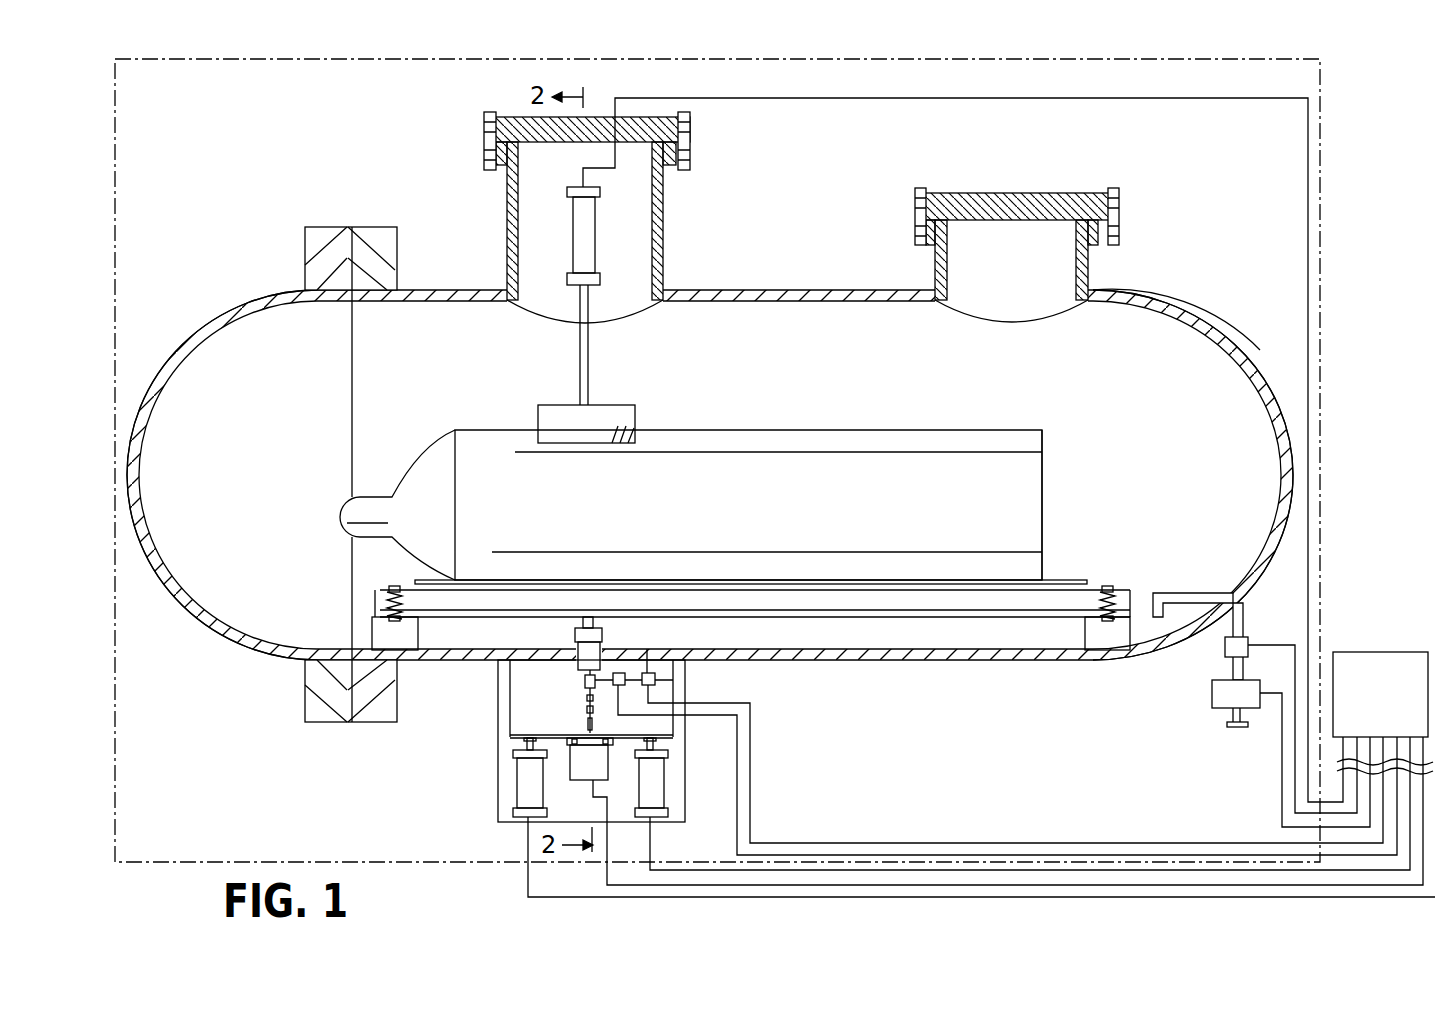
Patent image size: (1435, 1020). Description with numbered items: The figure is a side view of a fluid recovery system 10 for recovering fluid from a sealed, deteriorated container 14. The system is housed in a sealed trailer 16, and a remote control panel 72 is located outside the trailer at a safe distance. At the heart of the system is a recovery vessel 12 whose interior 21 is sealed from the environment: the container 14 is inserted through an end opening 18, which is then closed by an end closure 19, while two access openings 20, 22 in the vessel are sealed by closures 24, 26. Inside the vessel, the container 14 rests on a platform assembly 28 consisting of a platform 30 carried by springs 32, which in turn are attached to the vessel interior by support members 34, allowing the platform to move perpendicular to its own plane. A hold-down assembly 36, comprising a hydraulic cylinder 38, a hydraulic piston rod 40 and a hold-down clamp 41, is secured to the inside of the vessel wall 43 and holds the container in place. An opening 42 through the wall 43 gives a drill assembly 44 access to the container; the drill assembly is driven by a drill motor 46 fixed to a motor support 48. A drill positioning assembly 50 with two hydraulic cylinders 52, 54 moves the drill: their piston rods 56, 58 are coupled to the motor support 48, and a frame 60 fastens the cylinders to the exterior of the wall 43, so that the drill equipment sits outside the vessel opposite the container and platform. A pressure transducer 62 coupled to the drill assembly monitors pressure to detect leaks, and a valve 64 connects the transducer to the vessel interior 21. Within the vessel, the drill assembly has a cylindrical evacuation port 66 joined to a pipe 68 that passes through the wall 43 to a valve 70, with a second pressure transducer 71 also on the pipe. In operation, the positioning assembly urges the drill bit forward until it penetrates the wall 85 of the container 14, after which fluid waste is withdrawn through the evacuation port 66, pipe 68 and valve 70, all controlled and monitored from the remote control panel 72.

The fluid recovery system 10 is at (1354, 138).
The recovery vessel 12 is at (768, 290).
The container 14 is at (745, 430).
The sealed trailer 16 is at (1322, 269).
The end opening 18 is at (352, 362).
The end closure 19 is at (212, 320).
The access opening 20 is at (525, 205).
The interior 21 is at (1238, 378).
The access opening 22 is at (1082, 268).
The closure 24 is at (513, 117).
The closure 26 is at (1022, 193).
The platform assembly 28 is at (1078, 556).
The platform 30 is at (522, 615).
The spring 32 is at (382, 600).
The support member 34 is at (420, 642).
The hold-down assembly 36 is at (533, 340).
The hydraulic cylinder 38 is at (582, 238).
The hydraulic piston rod 40 is at (592, 335).
The hold-down clamp 41 is at (610, 405).
The opening 42 is at (570, 666).
The wall 43 is at (1208, 320).
The drill assembly 44 is at (518, 708).
The drill motor 46 is at (592, 770).
The motor support 48 is at (575, 735).
The drill positioning assembly 50 is at (482, 825).
The hydraulic cylinder 52 is at (515, 797).
The hydraulic cylinder 54 is at (668, 790).
The piston rod 56 is at (527, 742).
The piston rod 58 is at (660, 744).
The frame 60 is at (498, 695).
The pressure transducer 62 is at (622, 670).
The valve 64 is at (656, 680).
The cylindrical evacuation port 66 is at (600, 612).
The pipe 68 is at (790, 618).
The valve 70 is at (1212, 697).
The second pressure transducer 71 is at (1225, 648).
The remote control panel 72 is at (1380, 652).
The wall 85 is at (1035, 498).